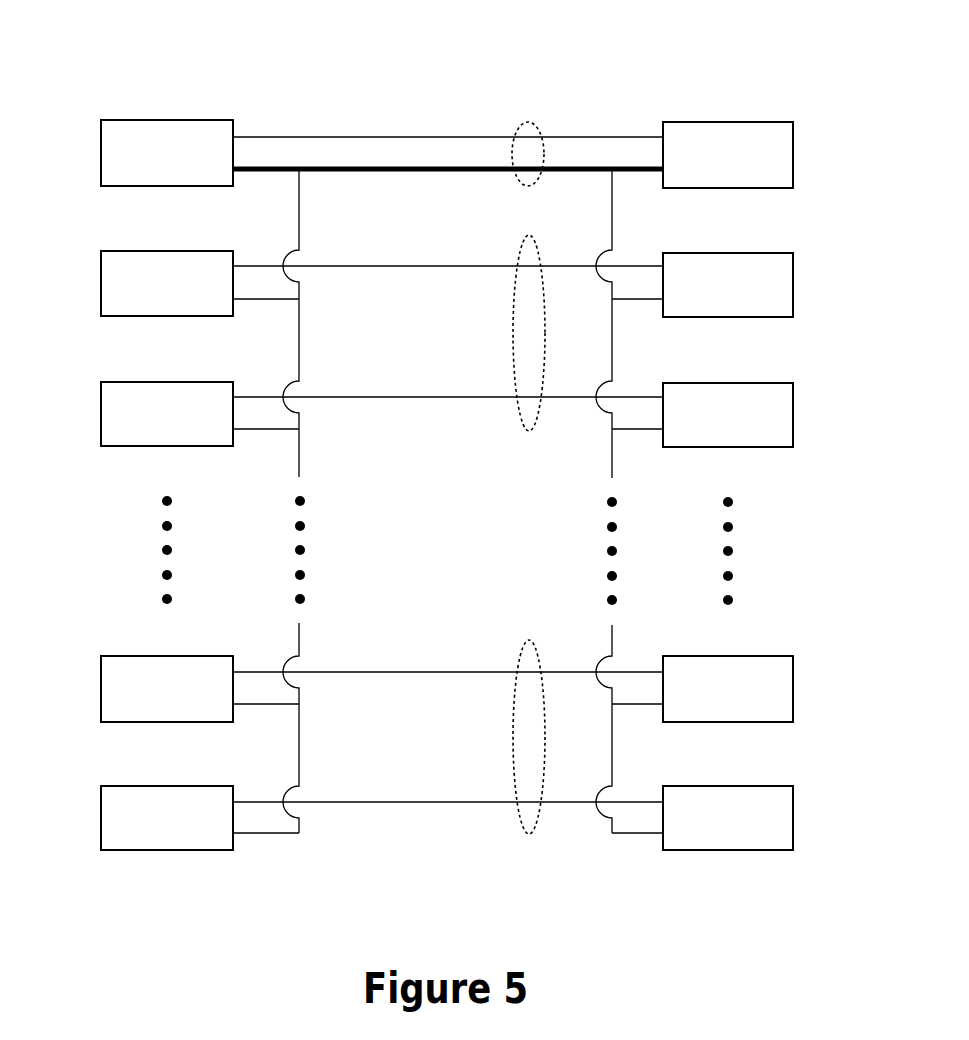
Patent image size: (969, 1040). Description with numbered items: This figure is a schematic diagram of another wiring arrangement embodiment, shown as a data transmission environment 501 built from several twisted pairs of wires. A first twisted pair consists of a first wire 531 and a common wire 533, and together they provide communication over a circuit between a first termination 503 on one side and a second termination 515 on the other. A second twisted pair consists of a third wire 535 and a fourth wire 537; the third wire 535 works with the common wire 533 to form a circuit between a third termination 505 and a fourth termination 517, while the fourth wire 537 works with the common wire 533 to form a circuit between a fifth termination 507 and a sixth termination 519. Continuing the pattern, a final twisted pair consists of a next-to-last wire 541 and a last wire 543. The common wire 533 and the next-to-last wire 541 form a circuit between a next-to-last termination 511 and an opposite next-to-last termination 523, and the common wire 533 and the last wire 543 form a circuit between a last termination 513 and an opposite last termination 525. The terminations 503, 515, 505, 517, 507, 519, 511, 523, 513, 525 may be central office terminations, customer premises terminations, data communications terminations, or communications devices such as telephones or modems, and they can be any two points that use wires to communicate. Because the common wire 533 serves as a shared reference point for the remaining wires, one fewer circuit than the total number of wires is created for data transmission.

The data transmission environment 501 is at (279, 75).
The first termination 503 is at (101, 146).
The third termination 505 is at (101, 278).
The fifth termination 507 is at (101, 407).
The (m-1)th termination 511 is at (101, 680).
The mth termination 513 is at (101, 810).
The second termination 515 is at (795, 150).
The fourth termination 517 is at (795, 273).
The sixth termination 519 is at (795, 403).
The (m-1)th termination 523 is at (795, 673).
The mth termination 525 is at (795, 803).
The first wire 531 is at (413, 135).
The common wire 533 is at (465, 172).
The third wire 535 is at (462, 270).
The fourth wire 537 is at (452, 400).
The (m-1)th wire 541 is at (378, 670).
The mth wire 543 is at (383, 800).